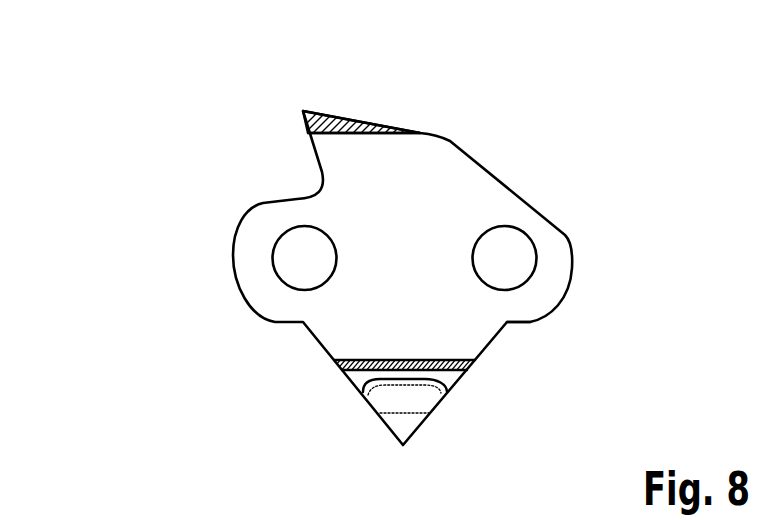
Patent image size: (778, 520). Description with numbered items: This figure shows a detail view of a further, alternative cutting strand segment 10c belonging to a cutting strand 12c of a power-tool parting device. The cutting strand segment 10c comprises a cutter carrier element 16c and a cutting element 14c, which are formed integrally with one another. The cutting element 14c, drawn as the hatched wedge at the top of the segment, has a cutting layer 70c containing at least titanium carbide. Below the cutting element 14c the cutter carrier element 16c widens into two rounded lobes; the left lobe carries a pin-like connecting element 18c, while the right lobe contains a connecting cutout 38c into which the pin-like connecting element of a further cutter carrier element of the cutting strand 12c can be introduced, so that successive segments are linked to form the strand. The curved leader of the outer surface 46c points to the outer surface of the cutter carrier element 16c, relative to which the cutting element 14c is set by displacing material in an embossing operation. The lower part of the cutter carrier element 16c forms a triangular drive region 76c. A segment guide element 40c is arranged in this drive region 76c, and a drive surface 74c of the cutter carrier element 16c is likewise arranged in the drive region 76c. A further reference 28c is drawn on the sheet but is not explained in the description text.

The cutting strand segment 10c is at (437, 187).
The cutting strand 12c is at (118, 111).
The cutting element 14c is at (400, 131).
The cutter carrier element 16c is at (443, 307).
The pin-like connecting element 18c is at (283, 257).
The nozzle arrangement 28c is at (667, 66).
The connecting cutout 38c is at (527, 257).
The segment guide element 40c is at (413, 395).
The outer surface 46c is at (480, 222).
The cutting layer 70c is at (322, 113).
The drive surface 74c is at (463, 405).
The triangular drive region 76c is at (318, 403).